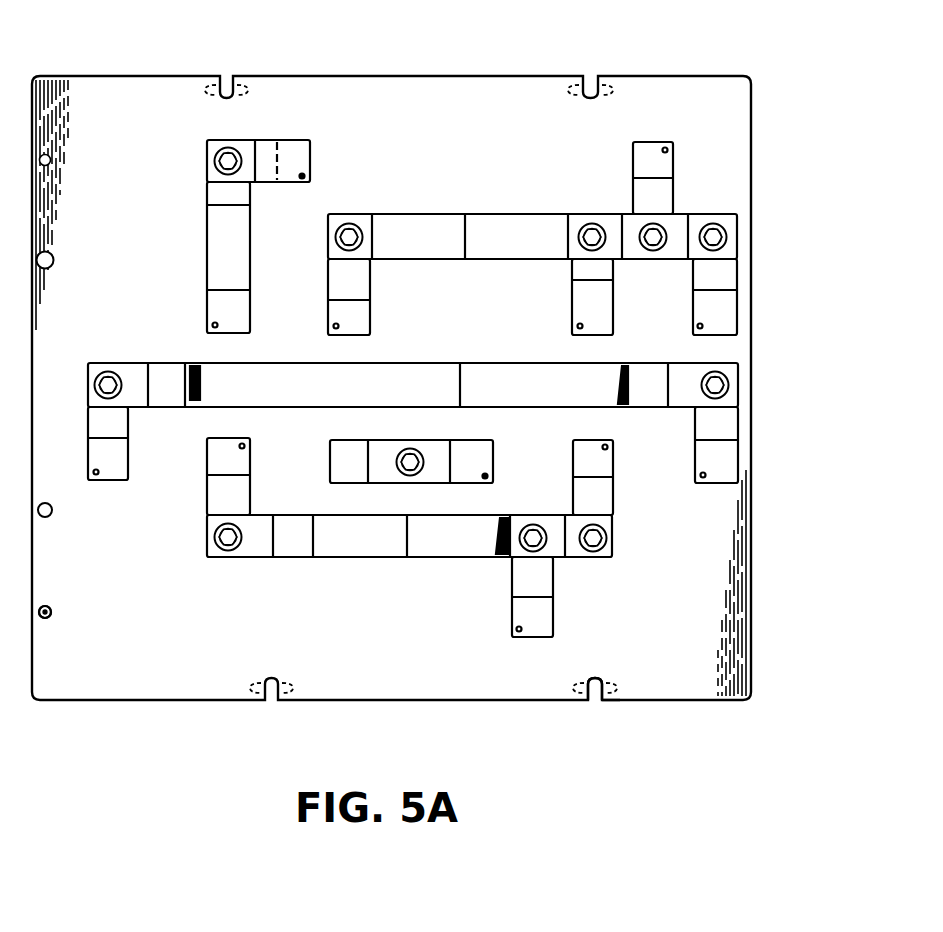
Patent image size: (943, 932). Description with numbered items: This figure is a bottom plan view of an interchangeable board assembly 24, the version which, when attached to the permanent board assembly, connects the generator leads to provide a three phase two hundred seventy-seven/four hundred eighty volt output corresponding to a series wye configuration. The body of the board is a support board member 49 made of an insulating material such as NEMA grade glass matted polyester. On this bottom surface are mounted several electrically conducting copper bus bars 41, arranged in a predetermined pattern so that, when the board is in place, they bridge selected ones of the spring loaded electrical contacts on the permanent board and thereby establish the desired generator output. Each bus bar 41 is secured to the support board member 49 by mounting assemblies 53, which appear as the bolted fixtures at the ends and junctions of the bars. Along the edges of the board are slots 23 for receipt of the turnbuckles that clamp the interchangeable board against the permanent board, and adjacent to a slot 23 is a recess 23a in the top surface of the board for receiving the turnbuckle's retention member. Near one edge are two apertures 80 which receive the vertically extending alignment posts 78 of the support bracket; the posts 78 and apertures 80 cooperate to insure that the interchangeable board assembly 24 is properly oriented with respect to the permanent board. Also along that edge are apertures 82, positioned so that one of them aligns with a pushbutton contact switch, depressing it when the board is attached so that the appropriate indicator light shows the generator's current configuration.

The interchangeable board assembly 24 is at (762, 158).
The mounting assembly 53 is at (351, 224).
The bus bar 41 is at (686, 384).
The support board member 49 is at (705, 641).
The slot 23 is at (593, 702).
The recess 23a is at (617, 700).
The aperture 82 is at (50, 516).
The alignment post 78 is at (47, 617).
The aperture 80 is at (50, 614).